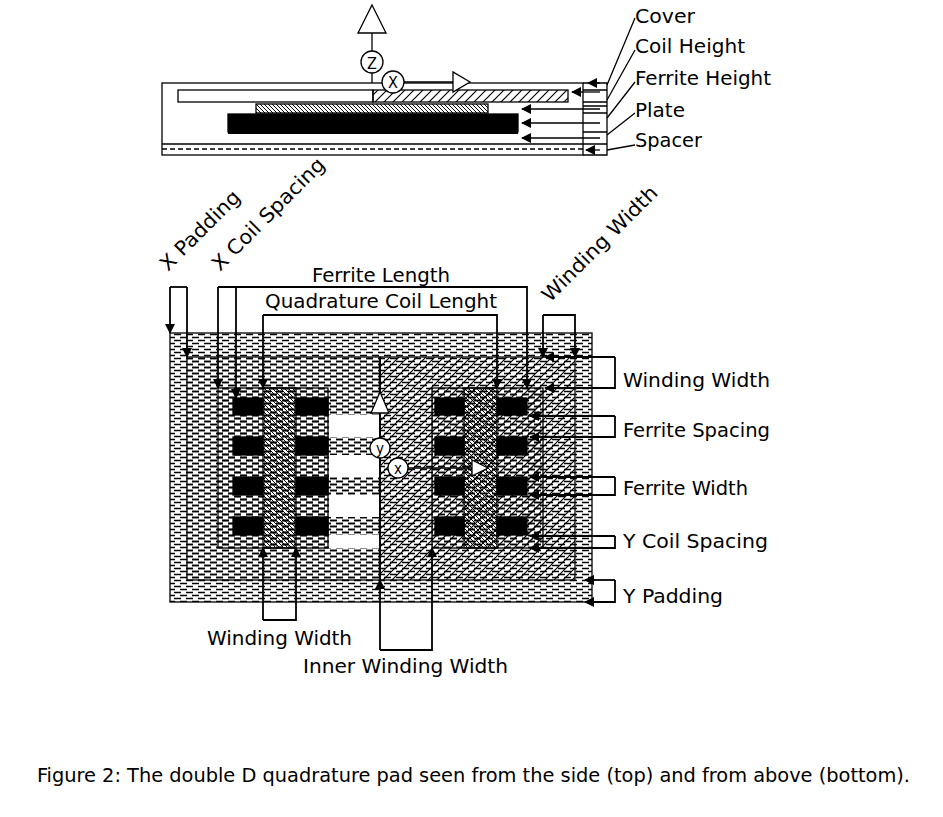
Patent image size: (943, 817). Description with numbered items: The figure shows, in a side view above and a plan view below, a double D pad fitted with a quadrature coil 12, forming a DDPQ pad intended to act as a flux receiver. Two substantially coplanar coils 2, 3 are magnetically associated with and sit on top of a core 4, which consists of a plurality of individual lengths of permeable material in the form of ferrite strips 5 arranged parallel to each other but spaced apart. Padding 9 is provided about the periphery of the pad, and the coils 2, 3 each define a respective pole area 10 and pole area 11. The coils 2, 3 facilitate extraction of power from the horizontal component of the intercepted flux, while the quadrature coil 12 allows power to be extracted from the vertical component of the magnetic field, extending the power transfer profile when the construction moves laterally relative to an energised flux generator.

The coil 2 is at (222, 97).
The coil 3 is at (508, 98).
The core 4 is at (490, 133).
The ferrite strips 5 is at (393, 132).
The padding 9 is at (195, 592).
The pole area 10 is at (230, 467).
The pole area 11 is at (515, 535).
The quadrature coil 12 is at (288, 107).